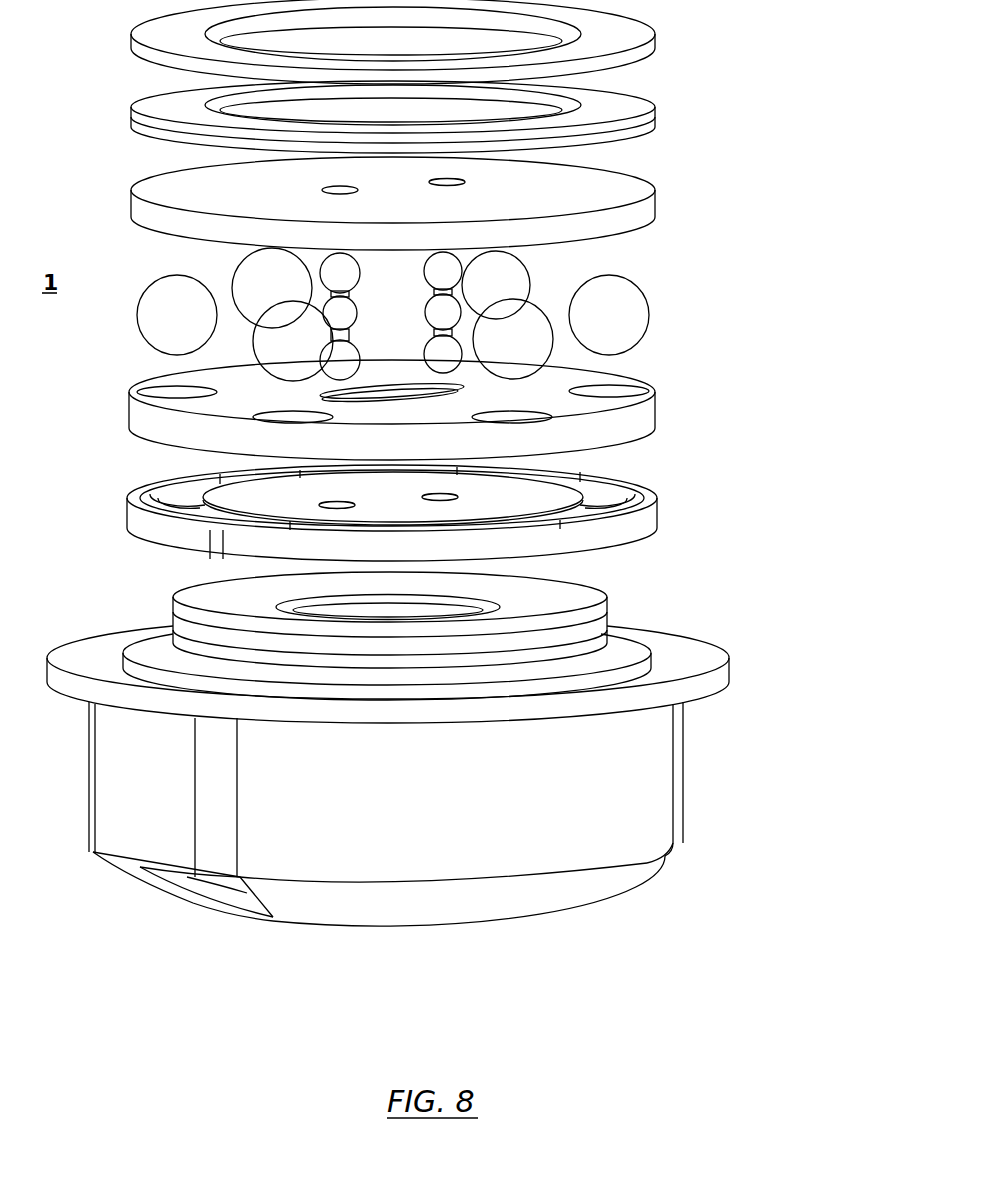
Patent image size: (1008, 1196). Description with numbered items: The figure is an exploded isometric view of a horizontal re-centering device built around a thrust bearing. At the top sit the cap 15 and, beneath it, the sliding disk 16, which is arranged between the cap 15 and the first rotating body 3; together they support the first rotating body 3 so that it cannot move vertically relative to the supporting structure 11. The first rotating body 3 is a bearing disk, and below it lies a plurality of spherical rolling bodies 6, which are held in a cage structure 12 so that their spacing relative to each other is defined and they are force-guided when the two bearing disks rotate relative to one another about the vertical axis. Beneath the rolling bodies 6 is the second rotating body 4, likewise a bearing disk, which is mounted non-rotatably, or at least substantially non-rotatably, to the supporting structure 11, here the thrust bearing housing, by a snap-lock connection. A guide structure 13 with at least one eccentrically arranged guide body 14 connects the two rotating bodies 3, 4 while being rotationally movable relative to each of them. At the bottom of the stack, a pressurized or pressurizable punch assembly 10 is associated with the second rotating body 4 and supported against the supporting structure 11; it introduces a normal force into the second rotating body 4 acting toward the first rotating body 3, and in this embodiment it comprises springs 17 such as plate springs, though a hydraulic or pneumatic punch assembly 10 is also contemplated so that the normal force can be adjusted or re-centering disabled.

The first rotating body 3 is at (635, 212).
The second rotating body 4 is at (620, 530).
The rolling bodies 6 is at (188, 316).
The punch assembly 10 is at (593, 628).
The supporting structure 11 is at (558, 805).
The cage structure 12 is at (573, 430).
The guide structure 13 is at (278, 266).
The guide body 14 is at (745, 273).
The cap 15 is at (627, 32).
The sliding disk 16 is at (653, 113).
The springs 17 is at (818, 608).